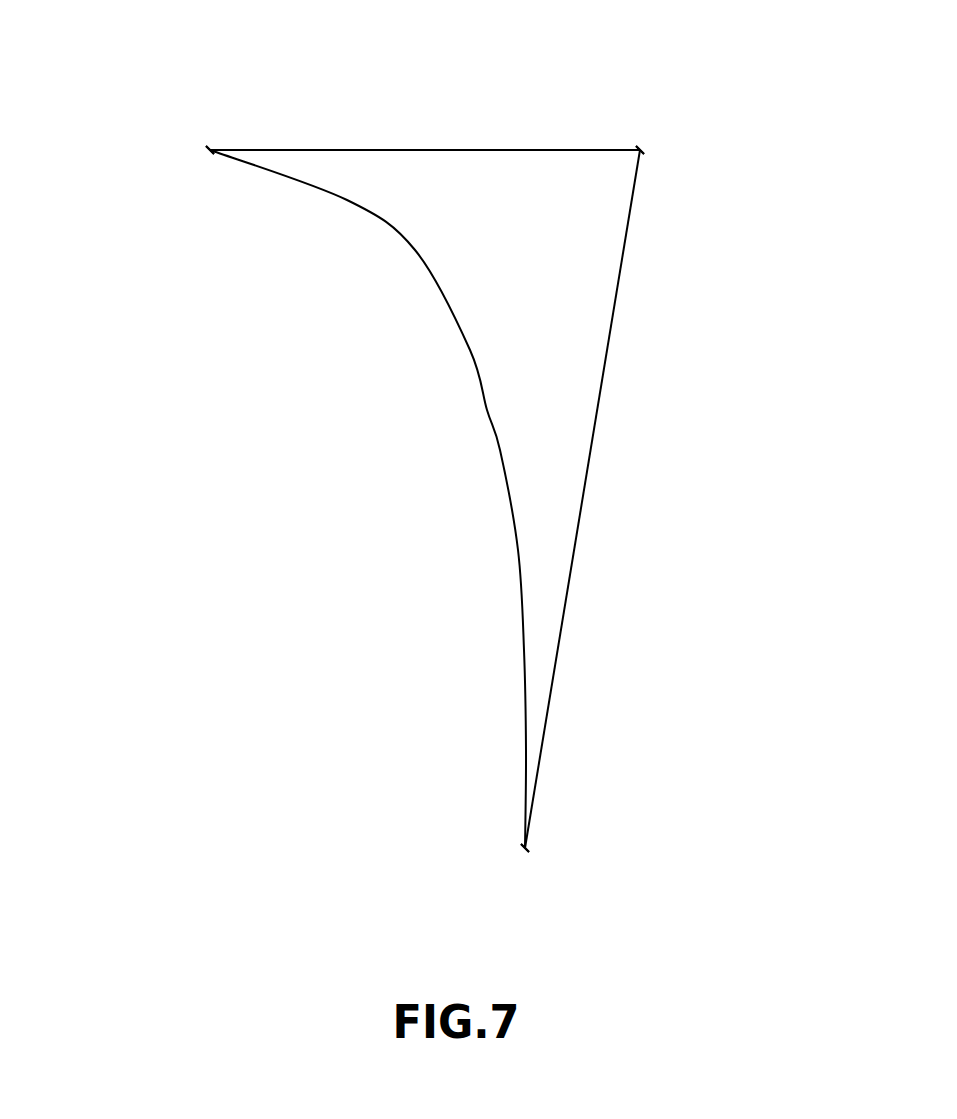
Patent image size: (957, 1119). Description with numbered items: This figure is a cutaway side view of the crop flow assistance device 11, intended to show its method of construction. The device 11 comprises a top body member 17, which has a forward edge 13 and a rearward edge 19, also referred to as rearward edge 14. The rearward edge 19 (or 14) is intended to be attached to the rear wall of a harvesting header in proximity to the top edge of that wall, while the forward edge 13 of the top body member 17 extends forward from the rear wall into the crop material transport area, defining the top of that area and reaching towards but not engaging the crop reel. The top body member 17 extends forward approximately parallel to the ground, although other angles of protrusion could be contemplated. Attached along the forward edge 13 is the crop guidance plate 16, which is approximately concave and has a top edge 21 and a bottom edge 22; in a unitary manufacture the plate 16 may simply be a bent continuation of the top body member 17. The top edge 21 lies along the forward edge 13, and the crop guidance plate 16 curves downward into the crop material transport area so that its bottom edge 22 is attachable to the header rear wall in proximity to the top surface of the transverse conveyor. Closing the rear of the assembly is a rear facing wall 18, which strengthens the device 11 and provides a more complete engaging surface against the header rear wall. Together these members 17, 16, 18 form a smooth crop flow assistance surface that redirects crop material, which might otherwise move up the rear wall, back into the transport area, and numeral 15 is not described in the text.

The crop flow assistance device 11 is at (449, 144).
The forward edge 13 is at (208, 146).
The rearward edge 14 is at (638, 146).
The lower apex / tip 15 is at (529, 851).
The crop guidance plate 16 is at (486, 409).
The top body member 17 is at (350, 144).
The rear facing wall 18 is at (598, 428).
The rearward edge 19 is at (645, 149).
The top edge 21 is at (206, 151).
The bottom edge 22 is at (523, 850).